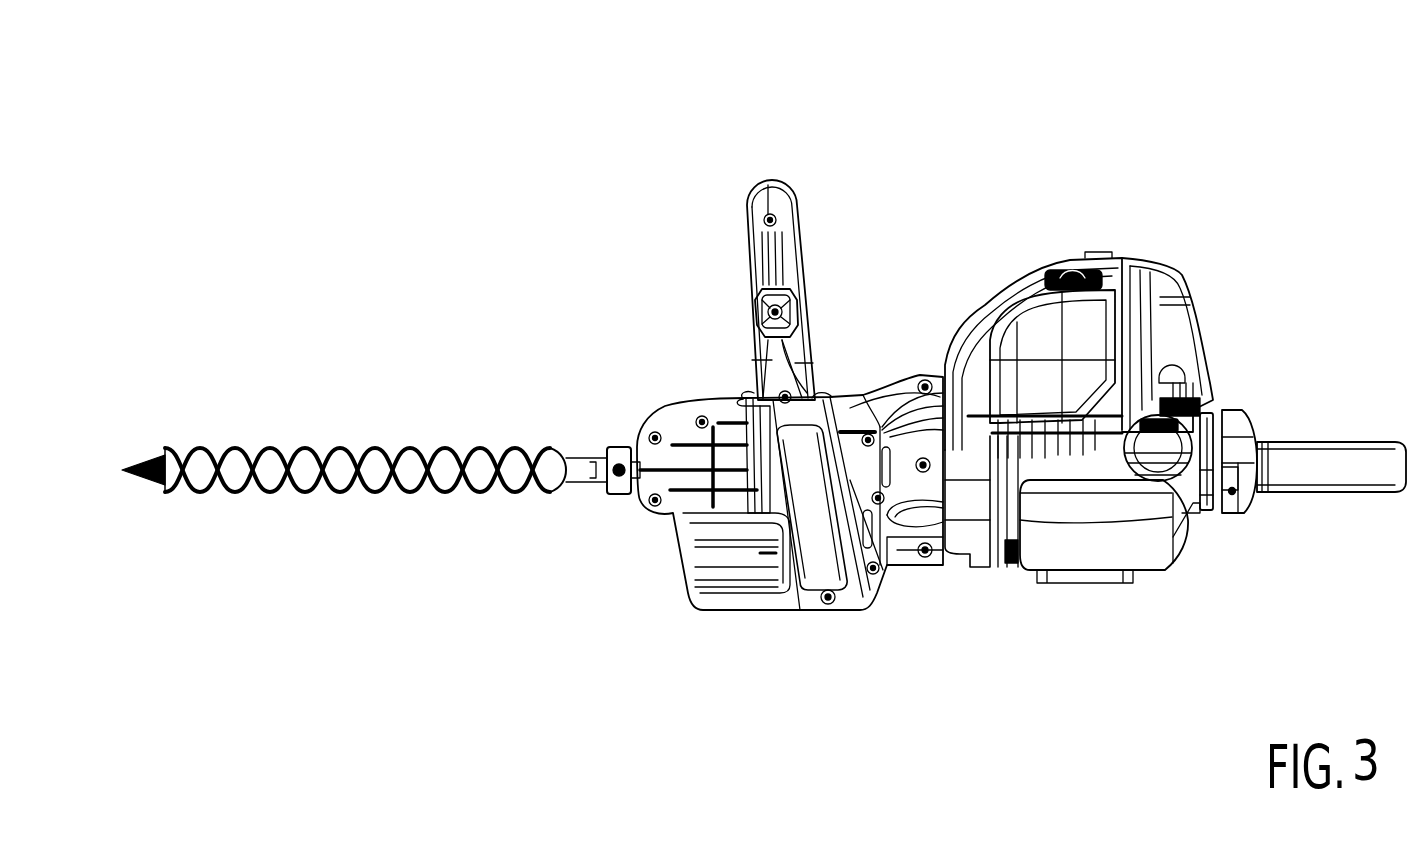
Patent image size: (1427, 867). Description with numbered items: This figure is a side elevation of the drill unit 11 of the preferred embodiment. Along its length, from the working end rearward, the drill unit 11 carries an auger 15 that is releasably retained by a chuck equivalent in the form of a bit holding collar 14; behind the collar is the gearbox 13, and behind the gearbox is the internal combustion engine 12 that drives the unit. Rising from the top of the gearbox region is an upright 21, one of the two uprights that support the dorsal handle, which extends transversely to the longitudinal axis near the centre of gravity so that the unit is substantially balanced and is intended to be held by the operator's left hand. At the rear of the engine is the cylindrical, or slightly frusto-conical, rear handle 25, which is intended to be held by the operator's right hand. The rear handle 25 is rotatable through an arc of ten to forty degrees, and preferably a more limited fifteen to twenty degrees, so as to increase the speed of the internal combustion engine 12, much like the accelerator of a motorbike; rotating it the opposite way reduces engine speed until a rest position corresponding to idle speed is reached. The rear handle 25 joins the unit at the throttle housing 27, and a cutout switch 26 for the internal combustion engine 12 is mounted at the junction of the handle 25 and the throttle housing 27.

The drill unit 11 is at (1160, 125).
The internal combustion engine 12 is at (963, 330).
The gearbox 13 is at (682, 428).
The bit holding collar 14 is at (619, 446).
The auger 15 is at (350, 449).
The upright 21 is at (790, 262).
The rear handle 25 is at (1334, 460).
The cutout switch 26 is at (1225, 410).
The throttle housing 27 is at (1210, 410).